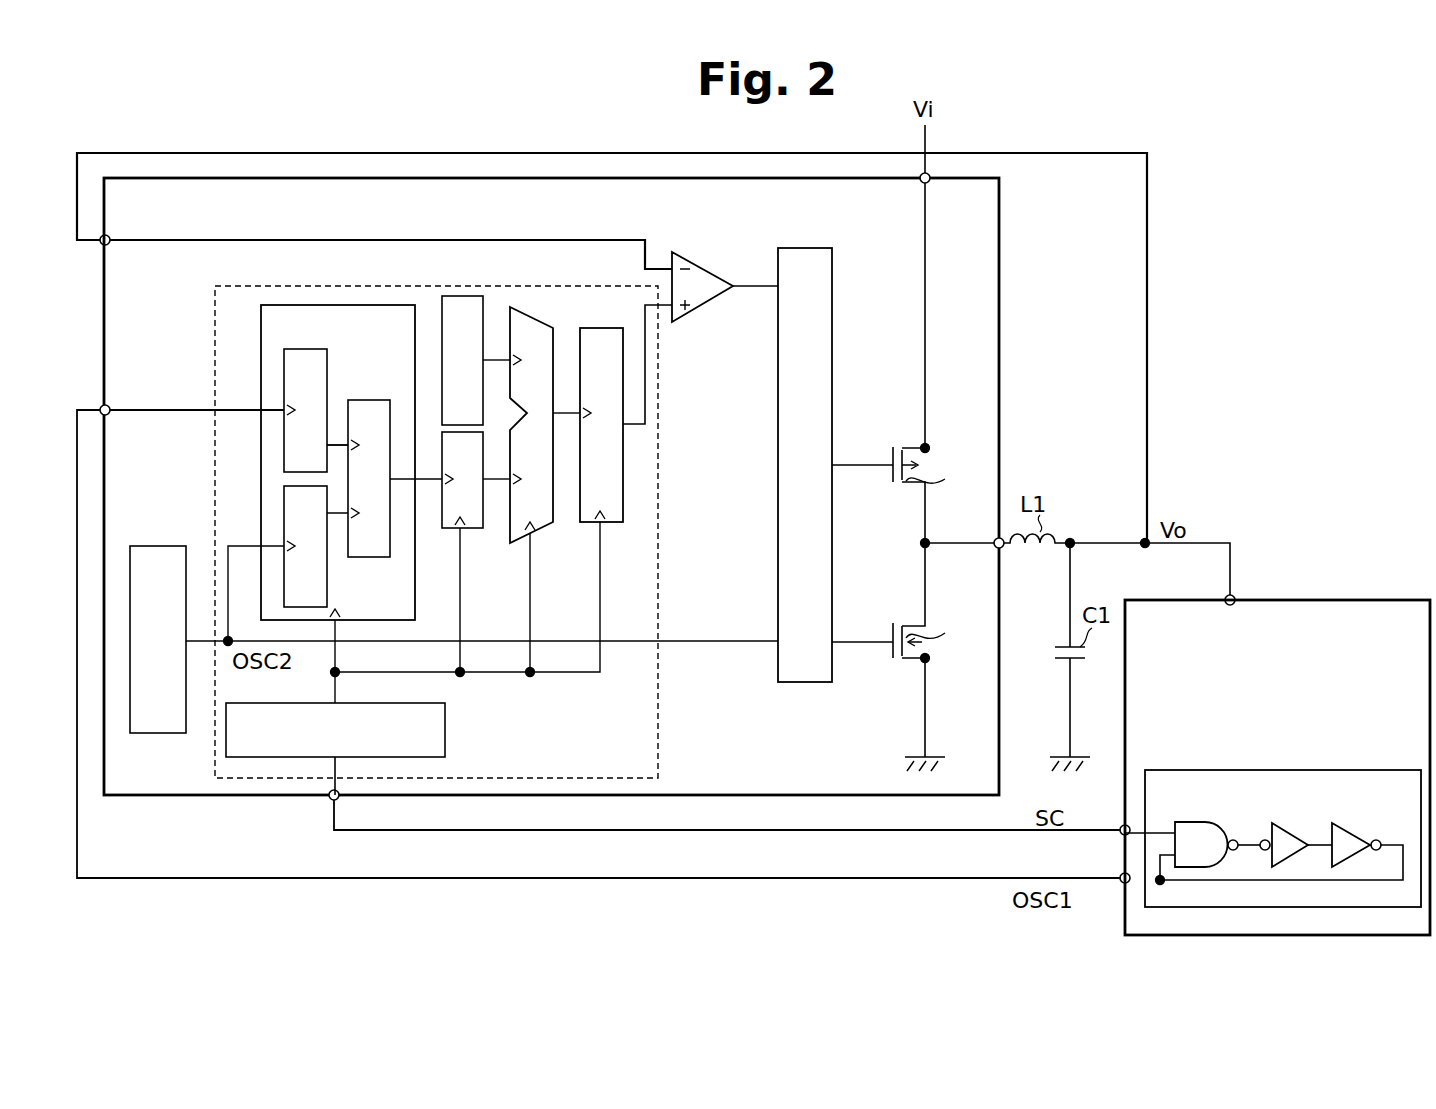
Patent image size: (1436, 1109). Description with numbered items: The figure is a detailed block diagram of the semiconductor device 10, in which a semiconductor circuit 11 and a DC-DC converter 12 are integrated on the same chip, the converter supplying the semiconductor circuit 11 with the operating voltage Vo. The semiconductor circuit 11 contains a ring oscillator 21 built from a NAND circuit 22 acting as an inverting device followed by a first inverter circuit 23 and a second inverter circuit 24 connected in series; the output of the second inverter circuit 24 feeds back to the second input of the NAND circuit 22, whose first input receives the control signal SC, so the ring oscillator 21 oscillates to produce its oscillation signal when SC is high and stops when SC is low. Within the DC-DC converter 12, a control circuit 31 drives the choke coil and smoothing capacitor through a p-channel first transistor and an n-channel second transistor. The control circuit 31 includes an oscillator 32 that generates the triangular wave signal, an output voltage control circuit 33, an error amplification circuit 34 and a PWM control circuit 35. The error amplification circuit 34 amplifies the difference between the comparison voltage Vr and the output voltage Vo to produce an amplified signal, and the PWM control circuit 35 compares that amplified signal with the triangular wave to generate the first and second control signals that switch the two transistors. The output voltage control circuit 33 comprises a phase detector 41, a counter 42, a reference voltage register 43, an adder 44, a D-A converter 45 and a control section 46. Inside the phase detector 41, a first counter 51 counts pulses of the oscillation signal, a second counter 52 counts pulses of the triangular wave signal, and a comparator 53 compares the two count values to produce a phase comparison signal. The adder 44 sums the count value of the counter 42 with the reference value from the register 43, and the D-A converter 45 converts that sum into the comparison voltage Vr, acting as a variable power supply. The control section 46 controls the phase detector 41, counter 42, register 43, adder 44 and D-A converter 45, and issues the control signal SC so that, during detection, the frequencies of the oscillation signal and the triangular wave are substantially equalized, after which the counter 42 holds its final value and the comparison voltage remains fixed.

The semiconductor device 10 is at (1320, 263).
The semiconductor circuit 11 is at (1393, 600).
The DC-DC converter 12 is at (1198, 292).
The ring oscillator 21 is at (1355, 770).
The NAND circuit 22 is at (1184, 822).
The first inverter circuit 23 is at (1290, 833).
The second inverter circuit 24 is at (1352, 833).
The control circuit 31 is at (1000, 318).
The oscillator 32 is at (157, 546).
The output voltage control circuit 33 is at (660, 358).
The error amplification circuit 34 is at (700, 268).
The PWM control circuit 35 is at (806, 248).
The phase detector 41 is at (378, 303).
The counter 42 is at (478, 530).
The reference voltage register 43 is at (458, 296).
The adder 44 is at (526, 313).
The D-A converter 45 is at (600, 327).
The control section 46 is at (435, 704).
The first counter 51 is at (328, 350).
The second counter 52 is at (328, 575).
The comparator 53 is at (376, 400).